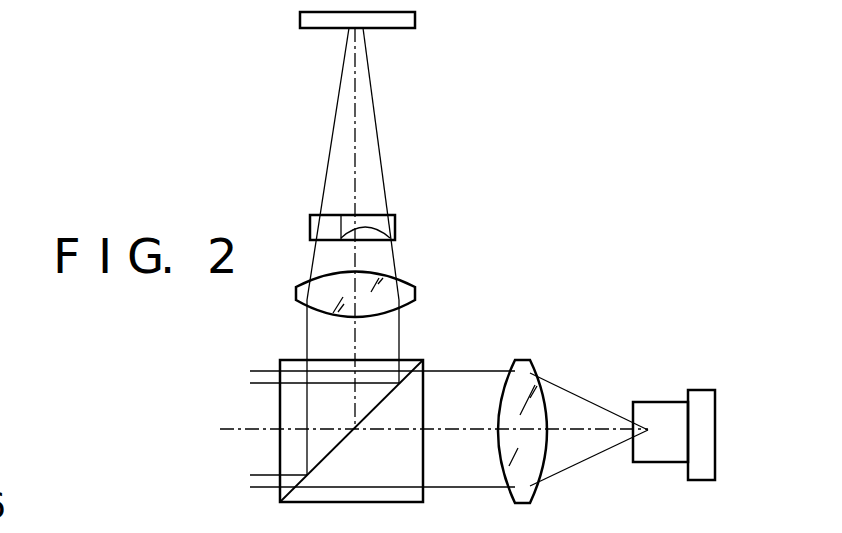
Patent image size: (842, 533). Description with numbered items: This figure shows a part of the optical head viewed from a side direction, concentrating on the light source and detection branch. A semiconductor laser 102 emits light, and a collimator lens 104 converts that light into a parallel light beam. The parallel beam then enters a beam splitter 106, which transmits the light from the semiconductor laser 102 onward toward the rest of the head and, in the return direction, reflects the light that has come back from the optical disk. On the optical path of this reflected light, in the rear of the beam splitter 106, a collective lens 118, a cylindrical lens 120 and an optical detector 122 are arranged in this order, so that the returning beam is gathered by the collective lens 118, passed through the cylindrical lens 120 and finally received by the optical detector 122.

The semiconductor laser 102 is at (661, 408).
The collimator lens 104 is at (531, 364).
The beam splitter 106 is at (432, 356).
The collective lens 118 is at (406, 295).
The cylindrical lens 120 is at (393, 228).
The optical detector 122 is at (415, 19).